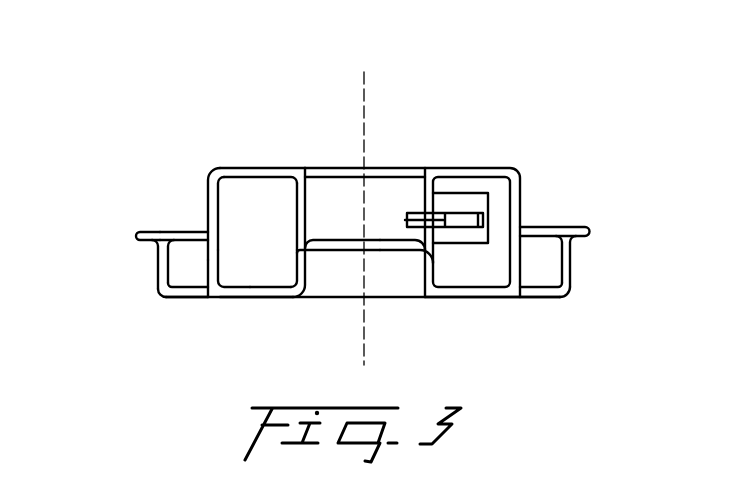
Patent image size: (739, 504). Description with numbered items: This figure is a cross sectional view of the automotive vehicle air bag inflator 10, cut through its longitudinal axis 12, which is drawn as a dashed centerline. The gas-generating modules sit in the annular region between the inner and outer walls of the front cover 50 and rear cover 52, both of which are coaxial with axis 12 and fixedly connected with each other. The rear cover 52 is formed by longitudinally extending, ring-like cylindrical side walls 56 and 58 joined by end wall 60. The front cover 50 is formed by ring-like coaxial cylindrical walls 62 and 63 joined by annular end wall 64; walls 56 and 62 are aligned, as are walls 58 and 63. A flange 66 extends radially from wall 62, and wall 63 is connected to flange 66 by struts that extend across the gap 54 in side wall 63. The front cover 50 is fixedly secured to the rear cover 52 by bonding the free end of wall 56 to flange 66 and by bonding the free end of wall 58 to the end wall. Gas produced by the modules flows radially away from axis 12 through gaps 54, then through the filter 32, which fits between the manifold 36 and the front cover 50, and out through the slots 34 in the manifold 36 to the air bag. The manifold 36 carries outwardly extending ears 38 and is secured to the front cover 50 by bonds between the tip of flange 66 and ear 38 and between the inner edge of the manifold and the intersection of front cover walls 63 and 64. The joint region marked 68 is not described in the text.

The automotive vehicle air bag inflator 10 is at (330, 195).
The longitudinal axis 12 is at (365, 92).
The filter 32 is at (139, 269).
The slots 34 is at (160, 288).
The manifold 36 is at (146, 325).
The ears 38 is at (143, 231).
The front cover 50 is at (507, 306).
The rear cover 52 is at (462, 197).
The gaps 54 is at (263, 237).
The side wall 56 is at (304, 200).
The side wall 58 is at (210, 183).
The end wall 60 is at (268, 167).
The cylindrical wall 62 is at (300, 278).
The side wall 63 is at (215, 293).
The annular end wall 64 is at (248, 291).
The flange 66 is at (182, 230).
The web 68 is at (309, 251).